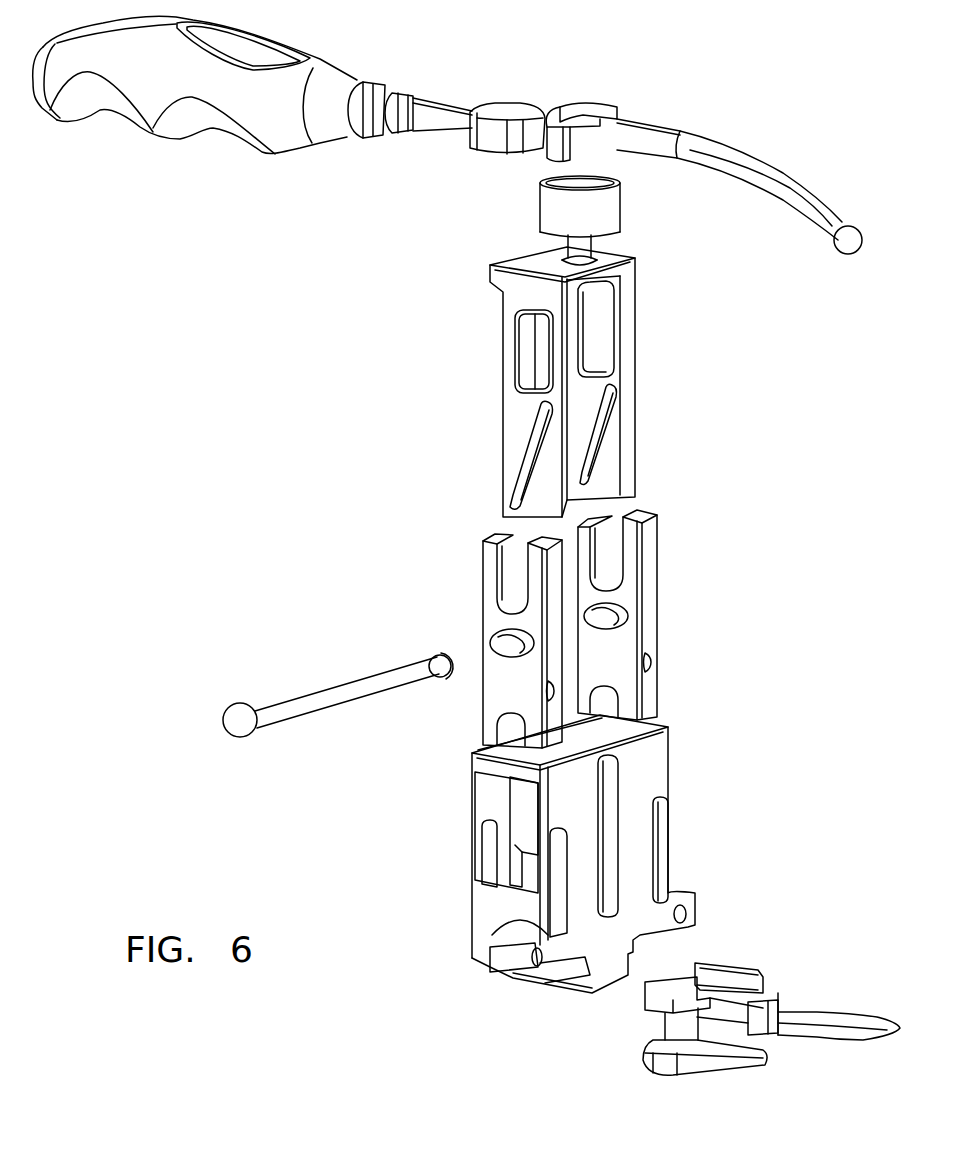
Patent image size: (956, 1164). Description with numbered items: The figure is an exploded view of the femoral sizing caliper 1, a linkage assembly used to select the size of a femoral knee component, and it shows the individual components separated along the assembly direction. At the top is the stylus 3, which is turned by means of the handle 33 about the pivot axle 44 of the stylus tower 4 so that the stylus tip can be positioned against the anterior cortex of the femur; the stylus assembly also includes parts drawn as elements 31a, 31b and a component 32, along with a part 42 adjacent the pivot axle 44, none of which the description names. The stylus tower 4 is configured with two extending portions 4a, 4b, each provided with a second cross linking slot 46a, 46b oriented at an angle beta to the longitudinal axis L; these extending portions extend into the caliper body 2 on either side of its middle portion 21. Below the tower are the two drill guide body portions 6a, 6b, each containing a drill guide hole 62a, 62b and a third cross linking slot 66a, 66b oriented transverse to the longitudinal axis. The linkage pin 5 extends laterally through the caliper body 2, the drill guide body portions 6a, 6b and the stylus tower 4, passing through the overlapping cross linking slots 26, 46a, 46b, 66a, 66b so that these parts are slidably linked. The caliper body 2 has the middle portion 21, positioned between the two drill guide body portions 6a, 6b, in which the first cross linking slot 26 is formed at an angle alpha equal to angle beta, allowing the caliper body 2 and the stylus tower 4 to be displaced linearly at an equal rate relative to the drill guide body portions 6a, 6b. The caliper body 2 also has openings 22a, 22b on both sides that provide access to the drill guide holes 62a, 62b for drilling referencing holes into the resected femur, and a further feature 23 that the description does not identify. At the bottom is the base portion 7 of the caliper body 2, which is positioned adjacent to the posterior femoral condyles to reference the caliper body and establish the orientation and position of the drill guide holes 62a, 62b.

The femoral sizing caliper 1 is at (768, 443).
The caliper body 2 is at (573, 854).
The stylus 3 is at (727, 140).
The stylus tower 4 is at (571, 382).
The extending portion 4a is at (517, 400).
The extending portion 4b is at (630, 293).
The linkage pin 5 is at (297, 700).
The drill guide body portion 6a is at (466, 640).
The drill guide body portion 6b is at (671, 614).
The base portion 7 is at (780, 992).
The middle portion 21 is at (600, 743).
The opening 22a is at (490, 945).
The opening 22b is at (673, 847).
The window of base 23 is at (502, 818).
The first cross linking slot 26 is at (507, 800).
The first jaw 31a is at (547, 130).
The second jaw 31b is at (583, 107).
The hub 32 is at (510, 104).
The handle 33 is at (163, 128).
The knob 42 is at (594, 212).
The pivot axle 44 is at (585, 249).
The second cross linking slot 46a is at (533, 453).
The second cross linking slot 46b is at (603, 424).
The drill guide hole 62a is at (543, 690).
The drill guide hole 62b is at (653, 673).
The third cross linking slot 66a is at (493, 640).
The third cross linking slot 66b is at (633, 617).